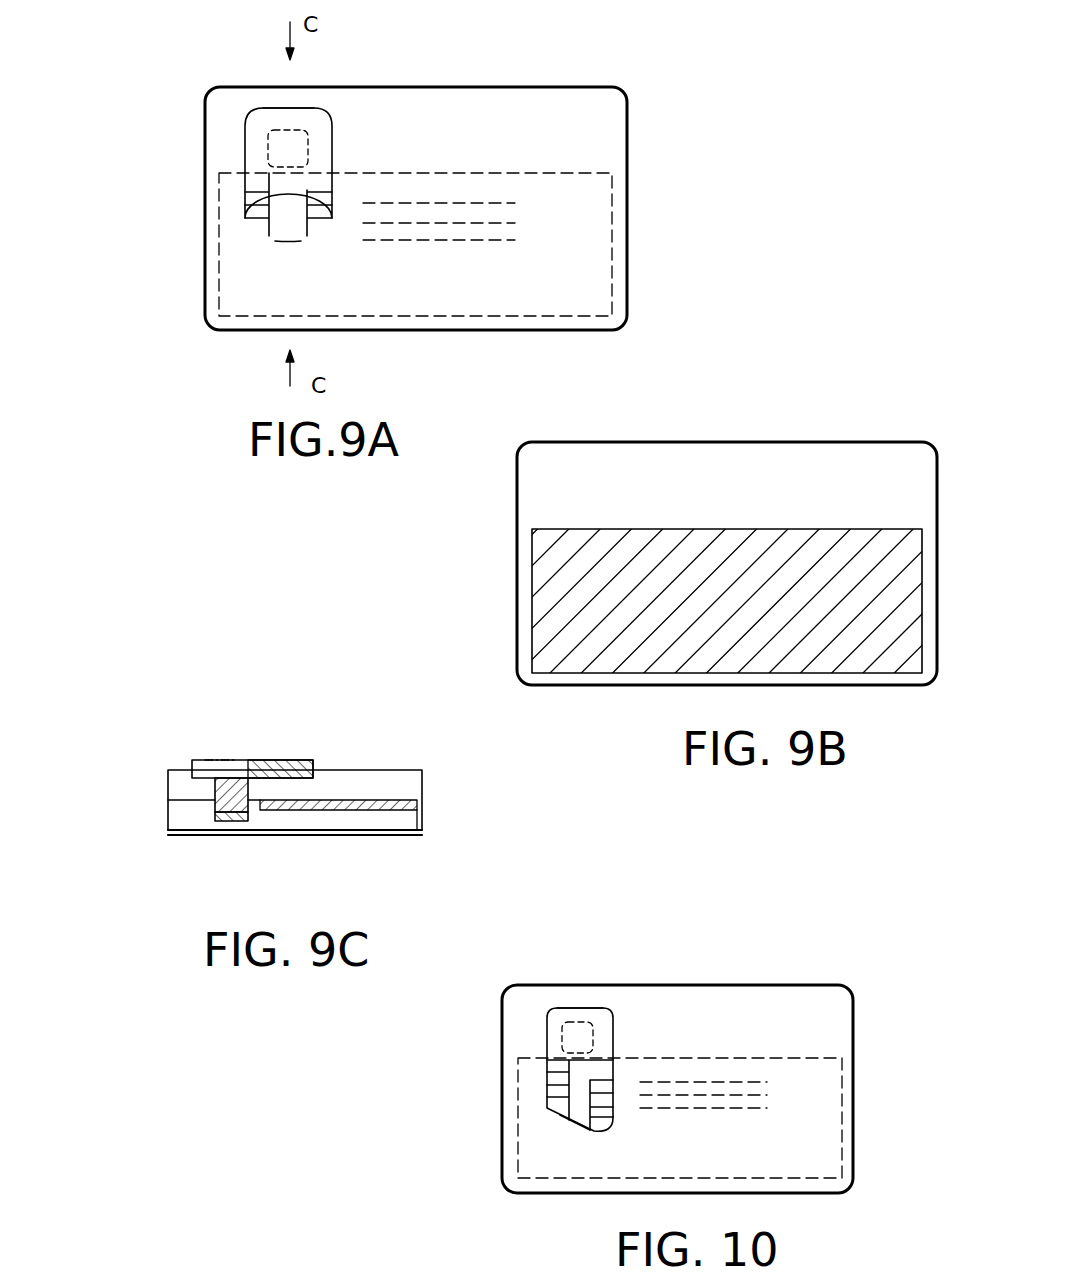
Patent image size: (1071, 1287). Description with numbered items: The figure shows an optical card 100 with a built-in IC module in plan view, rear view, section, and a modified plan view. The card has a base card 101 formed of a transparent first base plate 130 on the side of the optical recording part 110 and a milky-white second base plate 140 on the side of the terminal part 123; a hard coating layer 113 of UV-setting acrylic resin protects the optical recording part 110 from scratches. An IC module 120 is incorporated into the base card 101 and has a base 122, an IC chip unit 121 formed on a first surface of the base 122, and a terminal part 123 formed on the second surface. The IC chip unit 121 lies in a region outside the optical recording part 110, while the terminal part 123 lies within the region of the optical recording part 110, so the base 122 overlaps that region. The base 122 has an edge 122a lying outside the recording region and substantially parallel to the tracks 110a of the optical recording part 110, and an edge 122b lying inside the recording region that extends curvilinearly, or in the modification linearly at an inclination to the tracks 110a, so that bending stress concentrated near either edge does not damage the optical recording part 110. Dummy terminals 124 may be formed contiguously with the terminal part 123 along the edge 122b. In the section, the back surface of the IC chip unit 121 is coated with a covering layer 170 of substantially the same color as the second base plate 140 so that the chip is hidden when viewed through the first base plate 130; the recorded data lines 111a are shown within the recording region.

In FIG. 9A, the optical card with a built-in IC module 100 is at (439, 87).
In FIG. 9B, the optical card with a built-in IC module 100 is at (778, 442).
In FIG. 10, the optical card with a built-in IC module 100 is at (838, 985).
In FIG. 9C, the base card 101 is at (505, 748).
In FIG. 9A, the optical recording part 110 is at (603, 273).
In FIG. 9B, the optical recording part 110 is at (532, 590).
In FIG. 9C, the optical recording part 110 is at (337, 810).
In FIG. 10, the optical recording part 110 is at (841, 1098).
In FIG. 10, the tracks 110a is at (723, 1077).
In FIG. 9A, the recorded data lines 111a is at (513, 203).
In FIG. 9C, the hard coating layer 113 is at (183, 837).
In FIG. 9A, the IC module 120 is at (144, 72).
In FIG. 9C, the IC module 120 is at (150, 758).
In FIG. 10, the IC module 120 is at (410, 1008).
In FIG. 9A, the IC chip unit 121 is at (268, 131).
In FIG. 9C, the IC chip unit 121 is at (215, 788).
In FIG. 10, the IC chip unit 121 is at (562, 1027).
In FIG. 9A, the base 122 is at (245, 152).
In FIG. 9C, the base 122 is at (250, 760).
In FIG. 10, the base 122 is at (547, 1047).
In FIG. 9A, the edge 122a is at (290, 108).
In FIG. 10, the edge 122a is at (583, 1008).
In FIG. 9A, the edge 122b is at (300, 243).
In FIG. 10, the edge 122b is at (583, 1127).
In FIG. 9A, the terminal part 123 is at (247, 222).
In FIG. 9C, the terminal part 123 is at (297, 760).
In FIG. 10, the terminal part 123 is at (547, 1082).
In FIG. 9C, the dummy terminals 124 is at (207, 760).
In FIG. 9C, the first base plate 130 is at (408, 788).
In FIG. 9C, the second base plate 140 is at (410, 825).
In FIG. 9C, the covering layer 170 is at (230, 822).